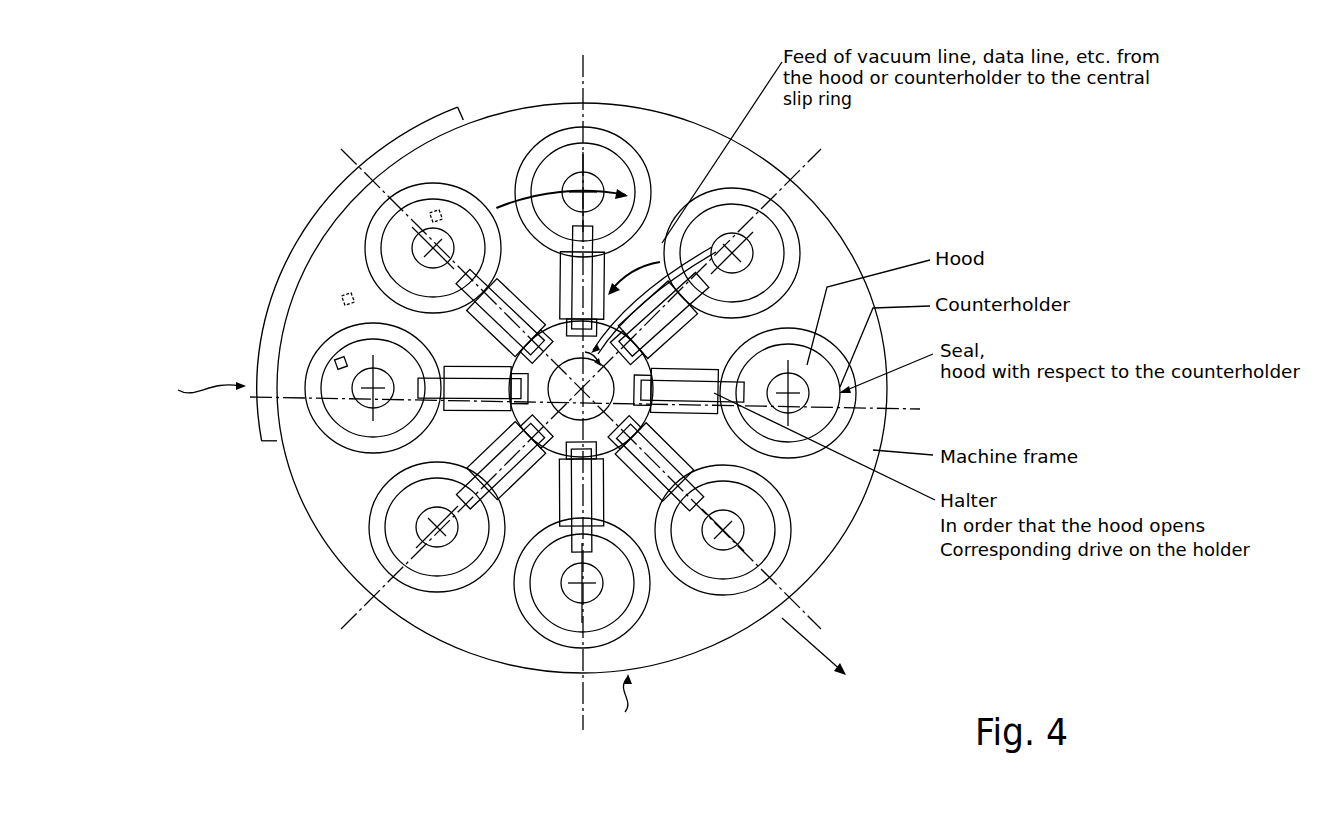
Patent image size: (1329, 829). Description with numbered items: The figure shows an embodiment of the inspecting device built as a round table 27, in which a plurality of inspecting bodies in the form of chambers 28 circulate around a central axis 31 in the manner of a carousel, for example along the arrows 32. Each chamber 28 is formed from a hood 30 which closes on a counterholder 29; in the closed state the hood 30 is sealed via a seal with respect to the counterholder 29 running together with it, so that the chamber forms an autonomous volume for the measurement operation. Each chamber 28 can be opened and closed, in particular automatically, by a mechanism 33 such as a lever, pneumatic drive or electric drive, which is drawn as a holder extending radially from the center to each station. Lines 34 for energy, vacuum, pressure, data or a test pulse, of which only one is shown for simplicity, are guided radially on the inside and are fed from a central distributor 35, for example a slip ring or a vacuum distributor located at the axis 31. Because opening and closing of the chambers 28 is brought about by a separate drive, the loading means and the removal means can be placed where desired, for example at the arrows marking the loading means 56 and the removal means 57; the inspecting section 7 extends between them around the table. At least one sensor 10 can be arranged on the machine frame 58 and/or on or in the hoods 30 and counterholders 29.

The inspecting section 7 is at (302, 225).
The sensor 10 is at (436, 212).
The round table 27 is at (197, 389).
The chamber 28 is at (613, 177).
The counterholder 29 is at (375, 518).
The hood 30 is at (405, 540).
The axis 31 is at (600, 397).
The arrows 32 is at (562, 333).
The mechanism 33 is at (483, 402).
The lines 34 is at (655, 258).
The central distributor 35 is at (542, 416).
The loading means 56 is at (624, 709).
The removal means 57 is at (818, 660).
The machine frame 58 is at (465, 612).